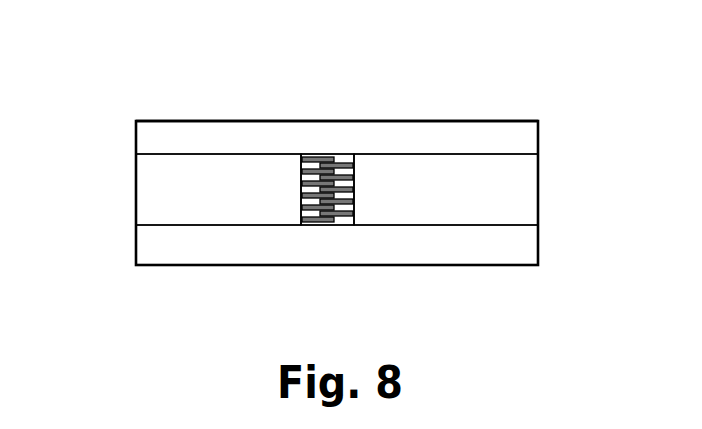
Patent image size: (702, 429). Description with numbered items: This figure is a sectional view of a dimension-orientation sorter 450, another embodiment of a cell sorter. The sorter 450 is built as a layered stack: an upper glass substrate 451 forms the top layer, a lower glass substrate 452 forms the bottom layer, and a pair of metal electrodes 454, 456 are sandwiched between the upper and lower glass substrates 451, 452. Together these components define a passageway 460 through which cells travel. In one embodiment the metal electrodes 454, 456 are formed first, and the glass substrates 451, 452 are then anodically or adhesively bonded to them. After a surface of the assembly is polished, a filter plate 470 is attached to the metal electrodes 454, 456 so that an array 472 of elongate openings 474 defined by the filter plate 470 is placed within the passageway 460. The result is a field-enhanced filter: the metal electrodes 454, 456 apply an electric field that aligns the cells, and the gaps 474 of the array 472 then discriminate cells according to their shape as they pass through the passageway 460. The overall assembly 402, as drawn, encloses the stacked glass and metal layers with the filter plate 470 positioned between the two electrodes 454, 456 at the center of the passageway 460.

The dimension-orientation sorter 450 is at (348, 70).
The upper glass substrate 451 is at (258, 137).
The lower glass substrate 452 is at (265, 250).
The metal electrode 454 is at (140, 202).
The metal electrode 456 is at (540, 196).
The passageway 460 is at (366, 149).
The filter plate 470 is at (333, 228).
The array 472 is at (310, 154).
The elongate openings 474 is at (354, 192).
The package 402 is at (437, 121).